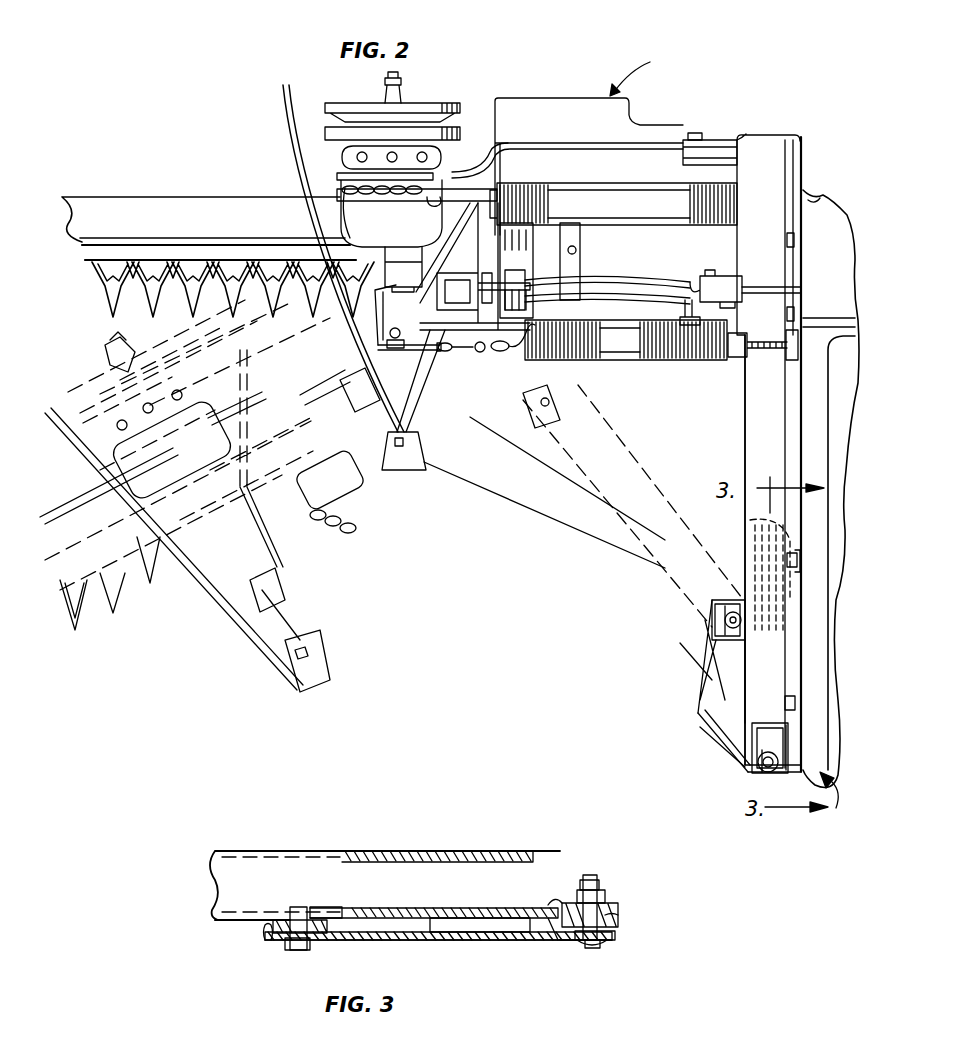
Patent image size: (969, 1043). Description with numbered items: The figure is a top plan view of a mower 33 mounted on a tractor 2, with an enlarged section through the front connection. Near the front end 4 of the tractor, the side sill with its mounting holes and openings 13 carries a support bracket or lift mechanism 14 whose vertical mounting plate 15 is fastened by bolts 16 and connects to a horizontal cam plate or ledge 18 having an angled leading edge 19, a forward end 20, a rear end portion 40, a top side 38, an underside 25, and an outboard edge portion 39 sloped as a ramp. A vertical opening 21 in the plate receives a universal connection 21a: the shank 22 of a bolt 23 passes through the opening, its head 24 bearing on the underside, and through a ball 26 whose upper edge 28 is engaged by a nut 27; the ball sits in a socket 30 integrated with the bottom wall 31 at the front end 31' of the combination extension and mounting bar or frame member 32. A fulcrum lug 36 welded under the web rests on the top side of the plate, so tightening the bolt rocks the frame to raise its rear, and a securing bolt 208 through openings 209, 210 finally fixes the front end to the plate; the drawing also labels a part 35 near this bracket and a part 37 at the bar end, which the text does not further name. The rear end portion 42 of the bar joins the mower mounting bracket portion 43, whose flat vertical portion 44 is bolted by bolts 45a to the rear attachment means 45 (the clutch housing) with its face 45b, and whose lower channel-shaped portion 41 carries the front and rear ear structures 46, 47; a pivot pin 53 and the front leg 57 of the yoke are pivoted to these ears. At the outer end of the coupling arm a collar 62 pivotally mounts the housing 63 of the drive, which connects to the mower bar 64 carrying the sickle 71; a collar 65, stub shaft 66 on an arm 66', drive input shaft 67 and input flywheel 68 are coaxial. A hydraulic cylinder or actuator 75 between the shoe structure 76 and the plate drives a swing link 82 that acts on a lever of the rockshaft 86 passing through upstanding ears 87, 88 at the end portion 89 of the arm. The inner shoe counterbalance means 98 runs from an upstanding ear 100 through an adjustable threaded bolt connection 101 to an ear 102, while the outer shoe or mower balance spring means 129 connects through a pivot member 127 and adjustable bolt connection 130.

In FIG. 2, the tractor 2 is at (839, 800).
In FIG. 2, the front end 4 is at (814, 825).
In FIG. 2, the mounting holes and openings 13 is at (820, 652).
In FIG. 2, the support bracket or lift mechanism 14 is at (755, 520).
In FIG. 3, the support bracket or lift mechanism 14 is at (455, 946).
In FIG. 2, the mounting plate 15 is at (797, 578).
In FIG. 2, the bolts 16 is at (787, 558).
In FIG. 2, the cam plate or ledge 18 is at (715, 676).
In FIG. 3, the cam plate or ledge 18 is at (398, 940).
In FIG. 2, the leading edge 19 is at (750, 758).
In FIG. 2, the forward end 20 is at (770, 778).
In FIG. 3, the forward end 20 is at (612, 932).
In FIG. 3, the vertical opening 21 is at (610, 943).
In FIG. 2, the universal connection 21a is at (758, 768).
In FIG. 3, the universal connection 21a is at (612, 915).
In FIG. 3, the shank 22 is at (606, 900).
In FIG. 3, the bolt 23 is at (600, 884).
In FIG. 3, the head 24 is at (595, 950).
In FIG. 3, the underside 25 is at (562, 945).
In FIG. 2, the ball 26 is at (764, 720).
In FIG. 3, the ball 26 is at (560, 910).
In FIG. 2, the nut 27 is at (773, 777).
In FIG. 3, the nut 27 is at (587, 876).
In FIG. 3, the upper edge 28 is at (570, 905).
In FIG. 3, the socket 30 is at (552, 932).
In FIG. 3, the bottom wall 31 is at (434, 860).
In FIG. 2, the front end 31' is at (827, 744).
In FIG. 2, the combination extension and mounting bar or frame member 32 is at (748, 437).
In FIG. 3, the combination extension and mounting bar or frame member 32 is at (270, 851).
In FIG. 2, the mower 33 is at (642, 66).
In FIG. 2, the bolt 35 is at (741, 615).
In FIG. 3, the fulcrum lug 36 is at (320, 935).
In FIG. 3, the beam end 37 is at (235, 921).
In FIG. 2, the top side 38 is at (718, 700).
In FIG. 3, the top side 38 is at (420, 928).
In FIG. 2, the outboard edge portion 39 is at (710, 728).
In FIG. 2, the rear end portion 40 is at (712, 606).
In FIG. 3, the rear end portion 40 is at (264, 938).
In FIG. 2, the lower channel-shaped portion 41 is at (748, 134).
In FIG. 2, the rear end portion 42 is at (748, 408).
In FIG. 2, the mower mounting bracket portion 43 is at (775, 185).
In FIG. 2, the flat vertical portion 44 is at (790, 212).
In FIG. 2, the rear attachment means 45 is at (802, 264).
In FIG. 2, the bolts 45a is at (797, 315).
In FIG. 2, the face 45b is at (808, 200).
In FIG. 2, the front ear structure 46 is at (688, 280).
In FIG. 2, the rear ear structure 47 is at (712, 140).
In FIG. 2, the pivot pin 53 is at (694, 133).
In FIG. 2, the front leg 57 is at (700, 280).
In FIG. 2, the collar 62 is at (375, 155).
In FIG. 2, the housing 63 is at (364, 226).
In FIG. 2, the mower bar 64 is at (210, 212).
In FIG. 2, the collar 65 is at (398, 282).
In FIG. 2, the stub shaft 66 is at (408, 337).
In FIG. 2, the arm 66' is at (426, 274).
In FIG. 2, the drive input shaft 67 is at (400, 90).
In FIG. 2, the input flywheel 68 is at (425, 110).
In FIG. 2, the sickle 71 is at (155, 270).
In FIG. 2, the hydraulic cylinder or actuator 75 is at (668, 283).
In FIG. 2, the shoe structure 76 is at (408, 472).
In FIG. 2, the swing link 82 is at (475, 268).
In FIG. 2, the rockshaft 86 is at (505, 232).
In FIG. 2, the upstanding ear 87 is at (462, 355).
In FIG. 2, the upstanding ear 88 is at (498, 150).
In FIG. 2, the end portion 89 is at (500, 352).
In FIG. 2, the inner shoe counterbalance means 98 is at (632, 345).
In FIG. 2, the upstanding ear 100 is at (432, 380).
In FIG. 2, the adjustable threaded bolt connection 101 is at (762, 352).
In FIG. 2, the ear 102 is at (793, 365).
In FIG. 2, the pivot member 127 is at (442, 185).
In FIG. 2, the outer shoe or mower balance spring means 129 is at (600, 200).
In FIG. 2, the adjustable bolt connection 130 is at (548, 98).
In FIG. 2, the securing bolt 208 is at (732, 622).
In FIG. 3, the securing bolt 208 is at (312, 908).
In FIG. 2, the opening 209 is at (728, 640).
In FIG. 3, the opening 209 is at (320, 920).
In FIG. 3, the opening 210 is at (300, 950).